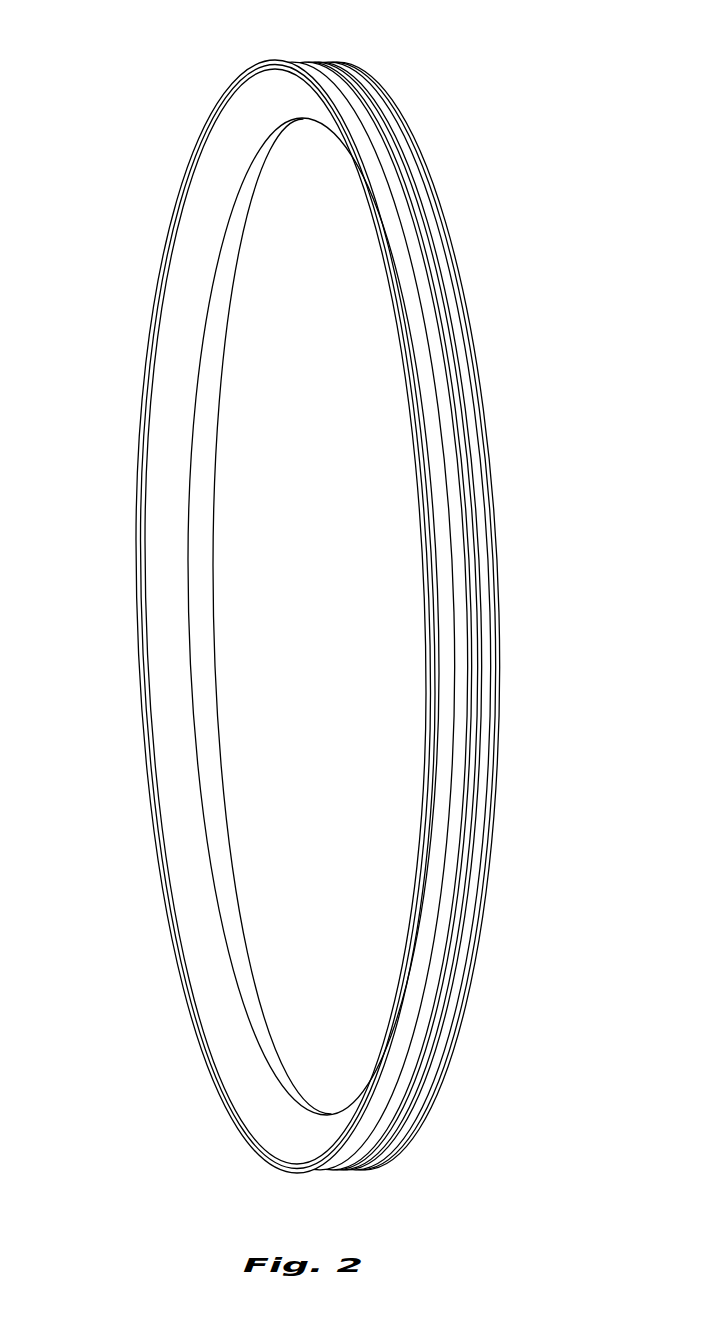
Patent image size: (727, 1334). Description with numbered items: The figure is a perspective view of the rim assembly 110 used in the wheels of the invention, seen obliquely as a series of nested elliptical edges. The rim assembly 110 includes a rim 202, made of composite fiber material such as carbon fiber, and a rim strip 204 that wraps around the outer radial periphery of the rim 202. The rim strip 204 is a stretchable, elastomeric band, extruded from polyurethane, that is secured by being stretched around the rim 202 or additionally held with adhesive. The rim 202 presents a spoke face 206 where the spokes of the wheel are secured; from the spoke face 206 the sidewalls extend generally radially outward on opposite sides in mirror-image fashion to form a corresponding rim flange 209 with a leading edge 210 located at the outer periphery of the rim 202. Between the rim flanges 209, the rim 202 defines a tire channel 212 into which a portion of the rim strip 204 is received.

The rim assembly 110 is at (311, 588).
The rim 202 is at (157, 543).
The rim strip 204 is at (336, 65).
The spoke face 206 is at (190, 392).
The rim flange 209 is at (170, 258).
The leading edge 210 is at (180, 170).
The tire channel 212 is at (293, 52).